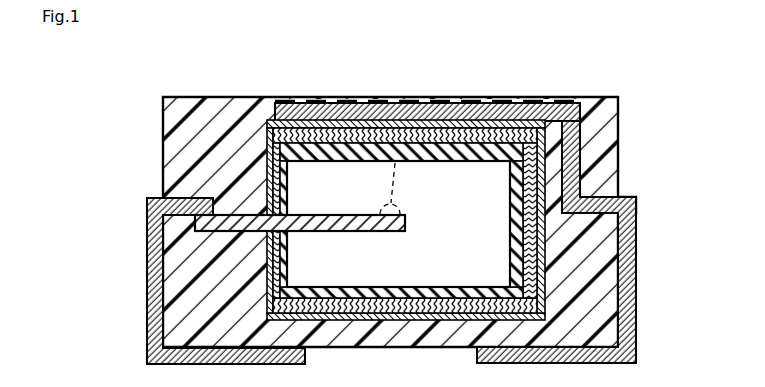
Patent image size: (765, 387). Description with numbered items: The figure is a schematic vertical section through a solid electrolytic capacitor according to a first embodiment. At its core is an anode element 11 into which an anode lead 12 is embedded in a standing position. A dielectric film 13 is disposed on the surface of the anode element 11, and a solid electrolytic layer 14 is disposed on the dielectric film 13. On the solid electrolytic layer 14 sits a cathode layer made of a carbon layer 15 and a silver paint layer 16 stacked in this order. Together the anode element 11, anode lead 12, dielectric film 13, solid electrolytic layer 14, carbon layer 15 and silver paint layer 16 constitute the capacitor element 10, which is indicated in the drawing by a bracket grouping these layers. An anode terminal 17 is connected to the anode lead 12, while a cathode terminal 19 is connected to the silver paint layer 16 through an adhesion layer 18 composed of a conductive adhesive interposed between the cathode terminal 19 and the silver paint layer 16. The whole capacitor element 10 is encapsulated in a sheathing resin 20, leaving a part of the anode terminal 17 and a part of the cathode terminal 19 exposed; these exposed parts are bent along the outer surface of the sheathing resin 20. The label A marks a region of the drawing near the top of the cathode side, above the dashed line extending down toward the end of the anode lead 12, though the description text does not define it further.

The capacitor element 10 is at (448, 214).
The anode element 11 is at (480, 220).
The anode lead 12 is at (160, 238).
The dielectric film 13 is at (515, 237).
The solid electrolytic layer 14 is at (527, 257).
The carbon layer 15 is at (537, 277).
The silver paint layer 16 is at (547, 298).
The anode terminal 17 is at (160, 261).
The adhesion layer 18 is at (478, 100).
The cathode terminal 19 is at (533, 102).
The sheathing resin 20 is at (595, 115).
The region A is at (402, 100).